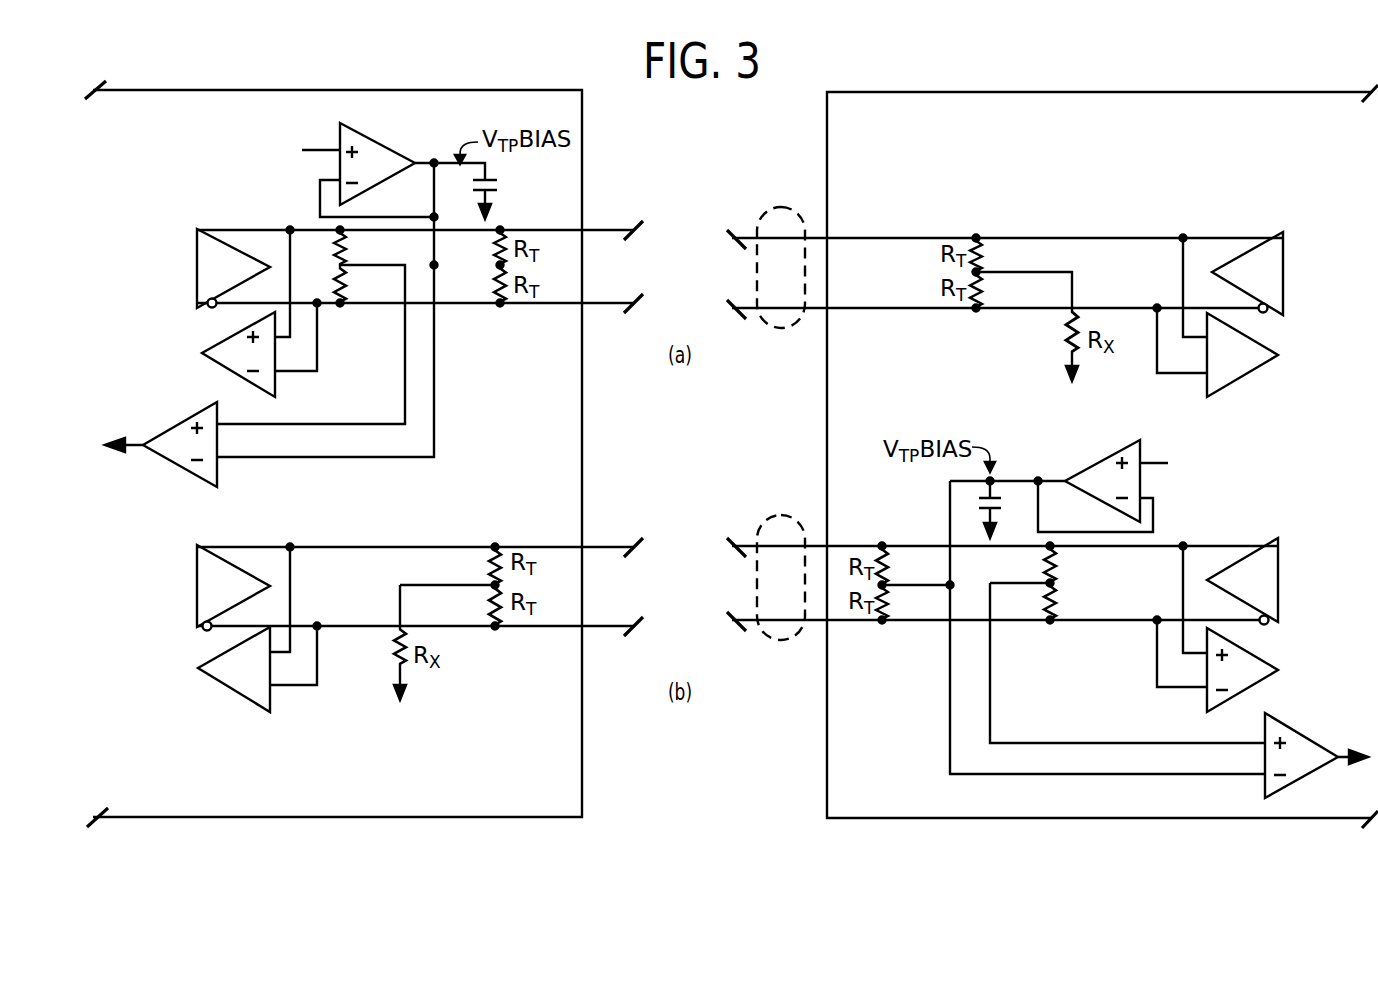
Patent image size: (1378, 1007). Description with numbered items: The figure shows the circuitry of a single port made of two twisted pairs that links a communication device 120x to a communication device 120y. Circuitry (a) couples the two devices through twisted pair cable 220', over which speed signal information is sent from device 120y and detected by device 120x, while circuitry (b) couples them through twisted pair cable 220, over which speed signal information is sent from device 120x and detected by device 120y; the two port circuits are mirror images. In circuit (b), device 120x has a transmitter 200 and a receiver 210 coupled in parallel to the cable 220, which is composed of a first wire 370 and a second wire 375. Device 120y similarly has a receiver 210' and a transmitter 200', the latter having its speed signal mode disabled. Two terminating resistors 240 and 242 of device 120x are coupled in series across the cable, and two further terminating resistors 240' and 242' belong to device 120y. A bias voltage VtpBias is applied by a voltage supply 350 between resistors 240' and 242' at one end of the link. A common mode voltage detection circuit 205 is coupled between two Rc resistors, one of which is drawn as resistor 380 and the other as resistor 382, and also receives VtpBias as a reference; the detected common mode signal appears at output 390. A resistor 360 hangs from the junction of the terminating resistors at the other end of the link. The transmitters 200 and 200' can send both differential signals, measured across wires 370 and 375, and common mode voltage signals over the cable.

The communication device 120x is at (510, 806).
The communication device 120y is at (920, 806).
The transmitter 200 is at (735, 429).
The transmitter 200' is at (1275, 580).
The common mode voltage detection circuit 205 is at (180, 472).
The receiver 210 is at (742, 512).
The receiver 210' is at (747, 512).
The twisted pair cable 220 is at (1002, 599).
The twisted pair cable 220' is at (708, 287).
The terminating resistor 240 is at (1003, 255).
The terminating resistor 240' is at (689, 407).
The terminating resistor 242 is at (1003, 290).
The terminating resistor 242' is at (689, 445).
The voltage supply 350 is at (369, 136).
The resistor RX 360 is at (396, 651).
The first wire 370 is at (607, 230).
The second wire 375 is at (608, 310).
The resistor RC- 380 is at (732, 406).
The resistor RC 382 is at (1050, 598).
The receiver output 390 is at (140, 443).